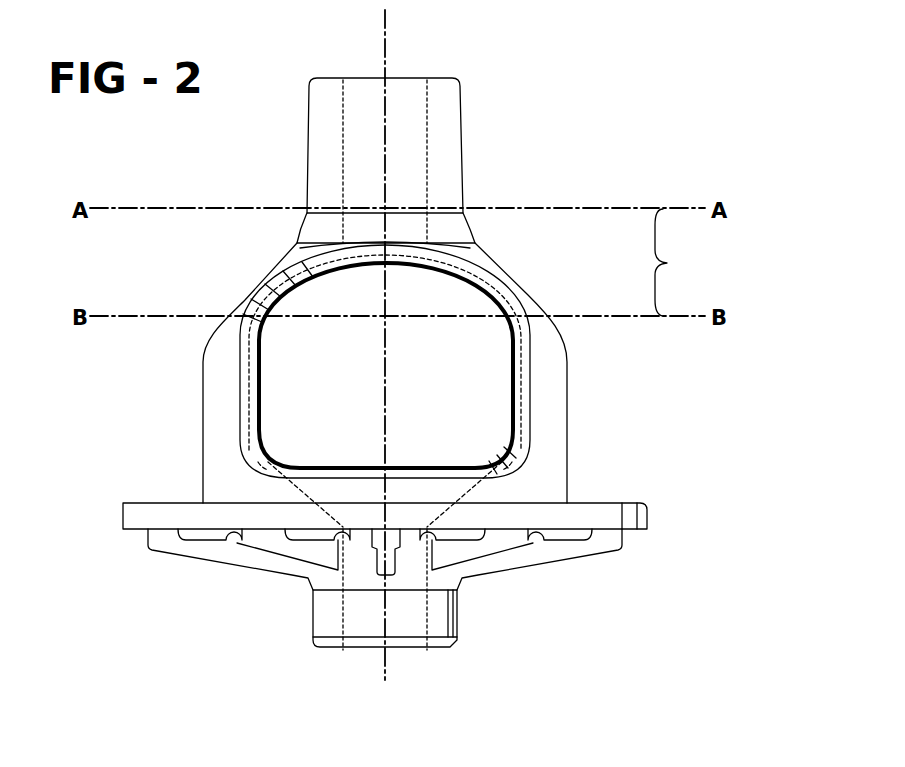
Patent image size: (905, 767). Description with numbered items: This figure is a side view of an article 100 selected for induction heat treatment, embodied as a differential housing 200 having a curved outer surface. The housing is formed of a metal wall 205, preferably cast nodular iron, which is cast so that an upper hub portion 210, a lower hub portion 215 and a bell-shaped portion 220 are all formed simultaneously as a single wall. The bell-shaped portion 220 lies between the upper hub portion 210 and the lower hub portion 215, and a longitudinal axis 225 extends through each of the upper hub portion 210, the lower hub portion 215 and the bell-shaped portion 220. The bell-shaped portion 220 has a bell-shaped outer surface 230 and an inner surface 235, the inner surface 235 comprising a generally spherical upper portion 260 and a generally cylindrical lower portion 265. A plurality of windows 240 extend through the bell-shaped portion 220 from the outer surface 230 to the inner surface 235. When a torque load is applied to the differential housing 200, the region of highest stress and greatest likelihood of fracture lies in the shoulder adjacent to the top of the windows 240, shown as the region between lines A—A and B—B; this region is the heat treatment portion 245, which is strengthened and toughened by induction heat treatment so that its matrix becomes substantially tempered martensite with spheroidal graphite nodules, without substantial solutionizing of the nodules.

The article 100 is at (486, 73).
The differential housing 200 is at (470, 196).
The metal wall 205 is at (412, 258).
The upper hub portion 210 is at (440, 151).
The lower hub portion 215 is at (445, 605).
The bell-shaped portion 220 is at (547, 415).
The longitudinal axis 225 is at (387, 598).
The bell-shaped outer surface 230 is at (237, 293).
The inner surface 235 is at (242, 432).
The windows 240 is at (500, 410).
The heat treatment portion 245 is at (667, 263).
The generally spherical upper portion 260 is at (250, 307).
The generally cylindrical lower portion 265 is at (243, 412).